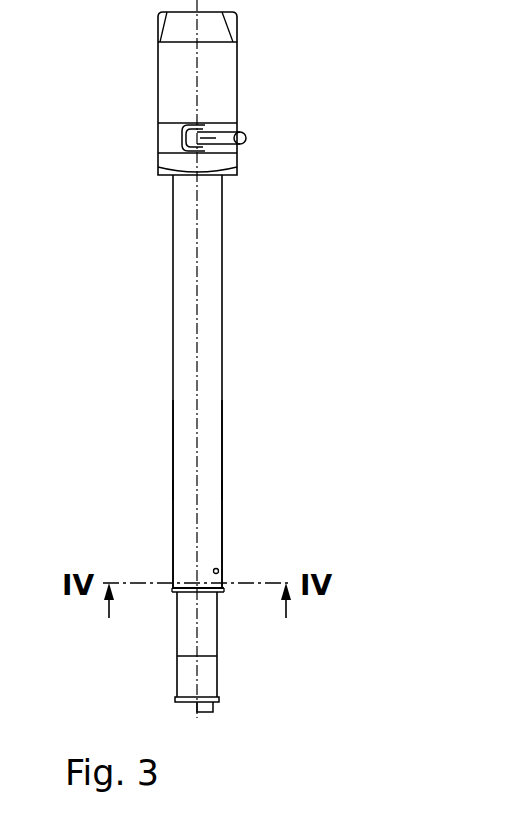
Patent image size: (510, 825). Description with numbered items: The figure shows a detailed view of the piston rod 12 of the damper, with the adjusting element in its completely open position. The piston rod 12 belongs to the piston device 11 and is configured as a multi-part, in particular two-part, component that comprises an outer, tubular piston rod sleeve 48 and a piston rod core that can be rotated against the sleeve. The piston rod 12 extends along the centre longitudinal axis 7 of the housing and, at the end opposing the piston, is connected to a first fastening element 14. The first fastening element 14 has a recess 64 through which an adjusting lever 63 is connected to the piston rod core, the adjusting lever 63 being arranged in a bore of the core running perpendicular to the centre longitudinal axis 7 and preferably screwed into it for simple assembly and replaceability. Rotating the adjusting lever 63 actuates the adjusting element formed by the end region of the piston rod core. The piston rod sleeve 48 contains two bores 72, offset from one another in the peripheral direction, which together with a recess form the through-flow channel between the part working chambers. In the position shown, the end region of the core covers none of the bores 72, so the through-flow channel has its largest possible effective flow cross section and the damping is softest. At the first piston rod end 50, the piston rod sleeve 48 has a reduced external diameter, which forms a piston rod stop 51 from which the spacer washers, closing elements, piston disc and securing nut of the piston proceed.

The centre longitudinal axis 7 is at (197, 303).
The first fastening element 14 is at (250, 67).
The recess 64 is at (210, 121).
The adjusting lever 63 is at (243, 146).
The piston rod 12 is at (250, 258).
The piston rod sleeve 48 is at (212, 462).
The piston device 11 is at (250, 508).
The bores 72 is at (218, 569).
The piston rod stop 51 is at (207, 592).
The first piston rod end 50 is at (232, 642).